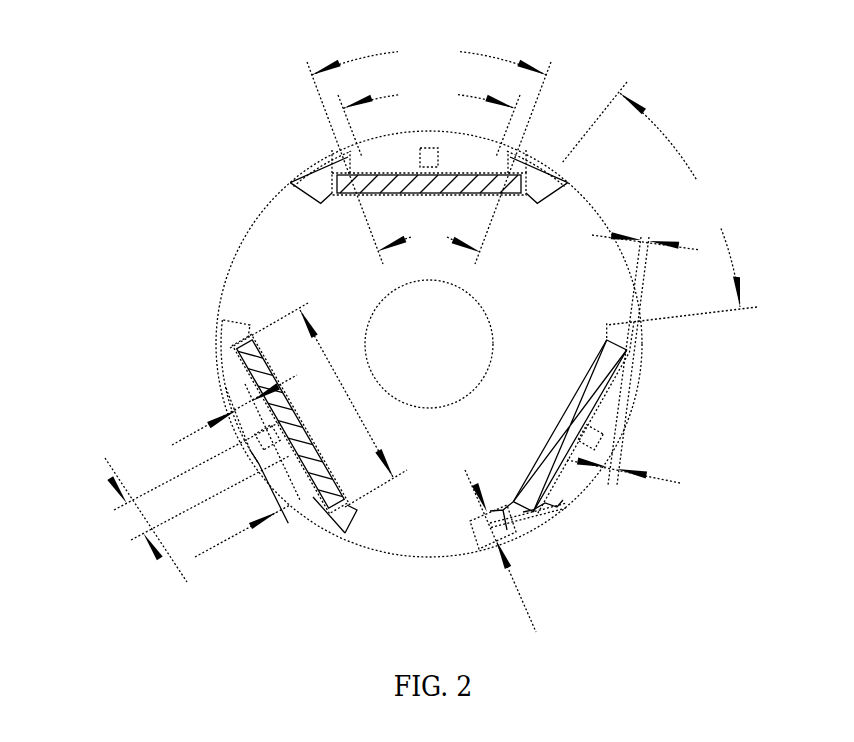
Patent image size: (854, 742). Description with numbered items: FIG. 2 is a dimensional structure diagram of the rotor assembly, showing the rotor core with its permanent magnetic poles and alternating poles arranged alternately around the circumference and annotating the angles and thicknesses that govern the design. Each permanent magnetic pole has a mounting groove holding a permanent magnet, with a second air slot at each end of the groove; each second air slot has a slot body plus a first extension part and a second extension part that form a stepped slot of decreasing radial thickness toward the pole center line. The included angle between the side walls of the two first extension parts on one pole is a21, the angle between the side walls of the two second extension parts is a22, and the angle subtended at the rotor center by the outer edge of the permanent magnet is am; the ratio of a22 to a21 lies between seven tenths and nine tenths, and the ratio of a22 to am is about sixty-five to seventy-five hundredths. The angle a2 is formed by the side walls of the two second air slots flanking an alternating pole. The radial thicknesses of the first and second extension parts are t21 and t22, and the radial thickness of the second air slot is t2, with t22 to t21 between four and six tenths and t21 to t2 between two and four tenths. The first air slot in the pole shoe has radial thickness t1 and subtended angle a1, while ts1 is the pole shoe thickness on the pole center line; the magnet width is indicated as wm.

The included angle of first extension parts a21 is at (429, 150).
The included angle of second extension parts a22 is at (429, 119).
The permanent magnet included angle am is at (429, 243).
The alternating pole included angle a2 is at (659, 203).
The radial thickness of first extension part t21 is at (646, 348).
The radial thickness of second extension part t22 is at (628, 462).
The radial thickness of first air slot t1 is at (228, 437).
The magnet width wm is at (318, 405).
The pole shoe thickness ts1 is at (237, 529).
The first air slot included angle a1 is at (197, 503).
The radial thickness of second air slot t2 is at (517, 551).